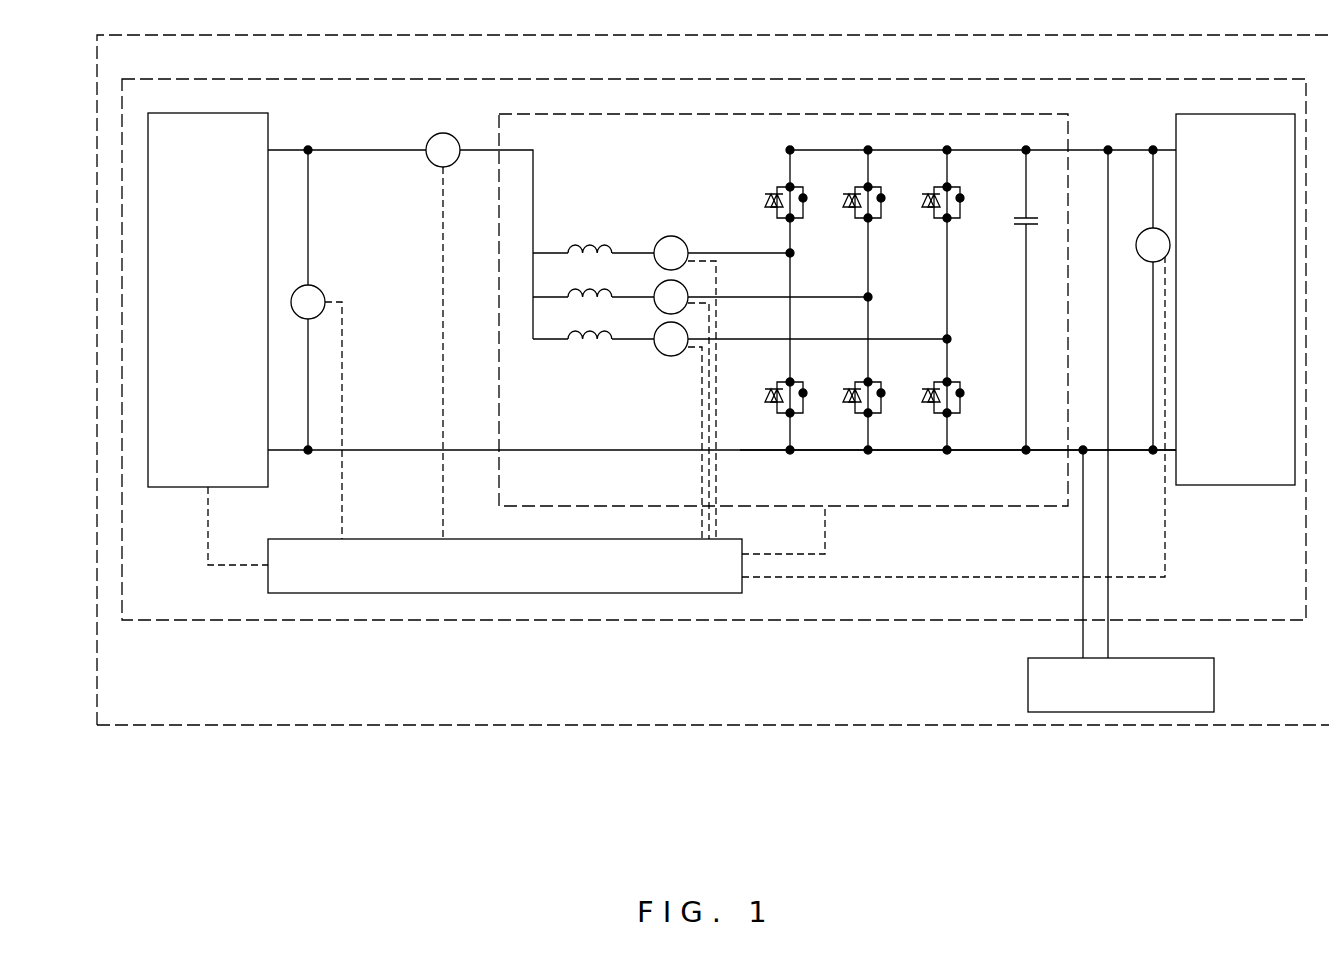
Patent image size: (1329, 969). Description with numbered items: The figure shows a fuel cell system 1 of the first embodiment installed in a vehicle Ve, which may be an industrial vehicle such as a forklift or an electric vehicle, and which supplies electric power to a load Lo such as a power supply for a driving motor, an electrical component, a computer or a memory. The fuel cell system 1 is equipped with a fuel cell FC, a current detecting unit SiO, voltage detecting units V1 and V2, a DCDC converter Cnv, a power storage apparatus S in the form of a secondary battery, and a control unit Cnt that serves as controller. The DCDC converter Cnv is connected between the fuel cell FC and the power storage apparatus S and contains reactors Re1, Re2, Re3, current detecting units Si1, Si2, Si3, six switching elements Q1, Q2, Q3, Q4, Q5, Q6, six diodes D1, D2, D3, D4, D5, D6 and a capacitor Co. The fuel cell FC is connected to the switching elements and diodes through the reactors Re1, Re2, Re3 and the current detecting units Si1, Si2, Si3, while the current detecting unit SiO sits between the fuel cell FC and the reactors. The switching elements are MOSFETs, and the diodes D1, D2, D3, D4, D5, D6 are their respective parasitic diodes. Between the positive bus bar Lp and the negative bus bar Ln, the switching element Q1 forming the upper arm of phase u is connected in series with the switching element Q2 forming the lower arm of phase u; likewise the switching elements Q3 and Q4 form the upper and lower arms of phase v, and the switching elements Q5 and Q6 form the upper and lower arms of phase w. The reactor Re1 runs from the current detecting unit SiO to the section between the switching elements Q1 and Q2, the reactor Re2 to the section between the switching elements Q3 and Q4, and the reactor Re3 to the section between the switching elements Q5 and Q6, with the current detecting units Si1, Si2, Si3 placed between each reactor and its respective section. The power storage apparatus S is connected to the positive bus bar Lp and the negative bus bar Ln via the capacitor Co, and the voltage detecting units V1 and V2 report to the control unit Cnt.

The vehicle Ve is at (1219, 34).
The fuel cell system 1 is at (1218, 78).
The DCDC converter Cnv is at (1046, 114).
The fuel cell FC is at (220, 113).
The power storage apparatus S is at (1186, 114).
The control unit Cnt is at (652, 539).
The load Lo is at (1044, 658).
The positive bus bar Lp is at (844, 147).
The negative bus bar Ln is at (848, 451).
The voltage detecting unit V1 is at (298, 291).
The current detecting unit SiO is at (443, 133).
The reactor Re1 is at (574, 251).
The reactor Re2 is at (574, 295).
The reactor Re3 is at (574, 337).
The current detecting unit Si1 is at (656, 246).
The current detecting unit Si2 is at (656, 289).
The current detecting unit Si3 is at (656, 332).
The switching element Q1 is at (806, 202).
The switching element Q2 is at (804, 397).
The switching element Q3 is at (884, 202).
The switching element Q4 is at (884, 397).
The switching element Q5 is at (964, 202).
The switching element Q6 is at (964, 397).
The diode D1 is at (773, 212).
The diode D2 is at (773, 407).
The diode D3 is at (851, 212).
The diode D4 is at (851, 407).
The diode D5 is at (929, 212).
The diode D6 is at (929, 407).
The capacitor Co is at (1028, 225).
The voltage detecting unit V2 is at (1142, 234).